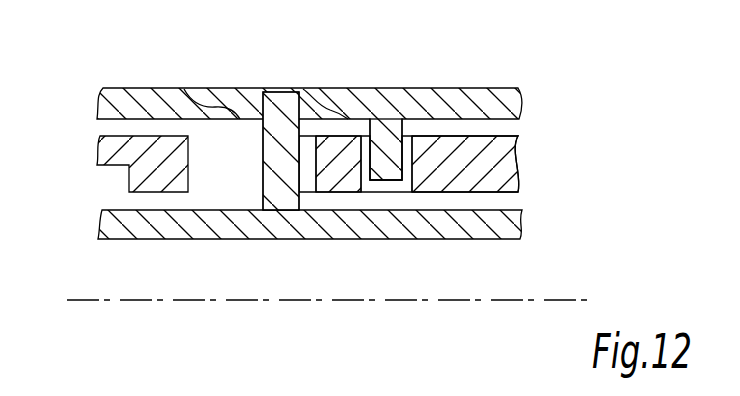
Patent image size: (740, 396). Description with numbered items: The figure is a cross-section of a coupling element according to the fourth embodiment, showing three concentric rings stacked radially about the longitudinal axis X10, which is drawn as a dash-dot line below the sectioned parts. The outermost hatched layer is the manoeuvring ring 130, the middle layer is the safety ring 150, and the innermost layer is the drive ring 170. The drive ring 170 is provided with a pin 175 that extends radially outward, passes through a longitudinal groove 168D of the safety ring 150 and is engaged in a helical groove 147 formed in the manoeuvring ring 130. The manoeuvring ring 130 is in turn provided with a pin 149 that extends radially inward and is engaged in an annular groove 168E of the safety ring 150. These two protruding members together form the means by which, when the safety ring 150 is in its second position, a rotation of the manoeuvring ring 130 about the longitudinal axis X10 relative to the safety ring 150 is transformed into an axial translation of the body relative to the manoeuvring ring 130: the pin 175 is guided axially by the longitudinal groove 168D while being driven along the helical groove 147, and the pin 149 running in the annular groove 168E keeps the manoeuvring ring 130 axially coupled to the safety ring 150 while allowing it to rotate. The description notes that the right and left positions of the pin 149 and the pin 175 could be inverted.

The manoeuvring ring 130 is at (507, 105).
The helical groove 147 is at (244, 92).
The pin 149 is at (390, 160).
The safety ring 150 is at (507, 170).
The longitudinal groove 168D is at (227, 180).
The annular groove 168E is at (404, 200).
The drive ring 170 is at (507, 225).
The pin 175 is at (285, 180).
The longitudinal axis X10 is at (128, 300).